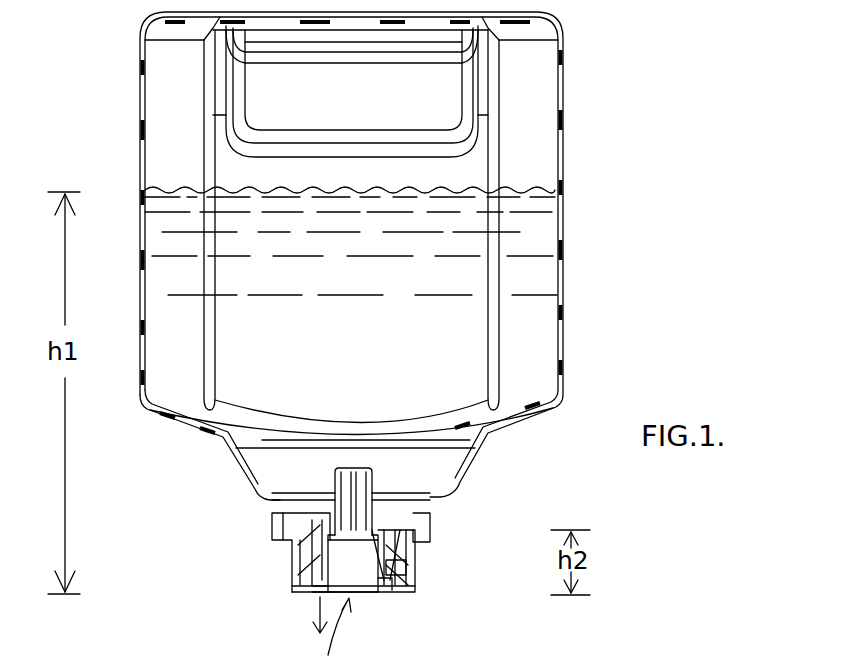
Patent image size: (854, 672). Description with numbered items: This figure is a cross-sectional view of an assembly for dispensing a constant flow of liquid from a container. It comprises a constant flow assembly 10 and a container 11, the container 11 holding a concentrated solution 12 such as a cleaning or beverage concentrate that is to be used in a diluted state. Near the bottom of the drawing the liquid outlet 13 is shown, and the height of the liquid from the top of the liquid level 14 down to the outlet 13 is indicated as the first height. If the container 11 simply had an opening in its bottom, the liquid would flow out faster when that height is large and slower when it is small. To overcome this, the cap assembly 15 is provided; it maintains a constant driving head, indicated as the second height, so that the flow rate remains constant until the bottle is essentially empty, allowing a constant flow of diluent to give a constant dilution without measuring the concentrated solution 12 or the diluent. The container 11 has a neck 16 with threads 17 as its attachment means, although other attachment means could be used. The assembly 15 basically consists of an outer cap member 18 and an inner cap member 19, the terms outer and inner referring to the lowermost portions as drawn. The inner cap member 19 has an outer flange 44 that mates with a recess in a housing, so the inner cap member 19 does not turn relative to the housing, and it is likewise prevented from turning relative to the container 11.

The constant flow assembly 10 is at (276, 571).
The container 11 is at (563, 316).
The concentrated solution 12 is at (351, 246).
The liquid outlet 13 is at (318, 594).
The liquid level 14 is at (512, 188).
The assembly 15 is at (283, 588).
The neck 16 is at (387, 580).
The threads 17 is at (410, 569).
The outer cap member 18 is at (410, 560).
The inner cap member 19 is at (428, 540).
The outer flange 44 is at (278, 545).